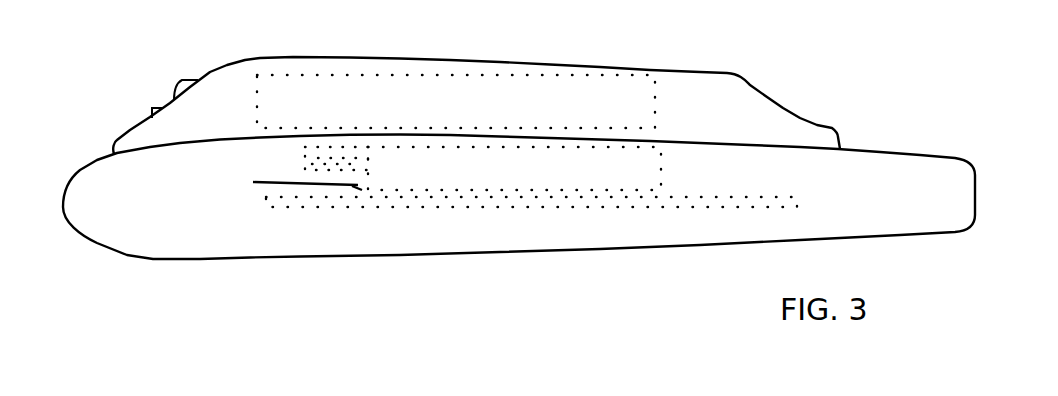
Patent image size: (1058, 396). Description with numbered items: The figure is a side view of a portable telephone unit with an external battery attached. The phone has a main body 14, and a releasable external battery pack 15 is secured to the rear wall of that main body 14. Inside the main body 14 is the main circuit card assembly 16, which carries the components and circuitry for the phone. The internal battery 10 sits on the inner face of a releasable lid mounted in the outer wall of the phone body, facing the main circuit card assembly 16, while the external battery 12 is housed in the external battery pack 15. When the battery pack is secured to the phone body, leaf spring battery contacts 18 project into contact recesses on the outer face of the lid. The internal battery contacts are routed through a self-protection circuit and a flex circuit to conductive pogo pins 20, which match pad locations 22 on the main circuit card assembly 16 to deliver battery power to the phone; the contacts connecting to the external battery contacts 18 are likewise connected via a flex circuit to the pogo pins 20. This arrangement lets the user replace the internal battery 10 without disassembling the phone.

The internal battery 10 is at (665, 160).
The external battery 12 is at (507, 77).
The main body 14 is at (877, 160).
The external battery pack 15 is at (718, 72).
The main circuit card assembly 16 is at (503, 207).
The leaf spring battery contacts 18 is at (305, 135).
The pogo pins 20 is at (290, 184).
The pad locations 22 is at (357, 193).